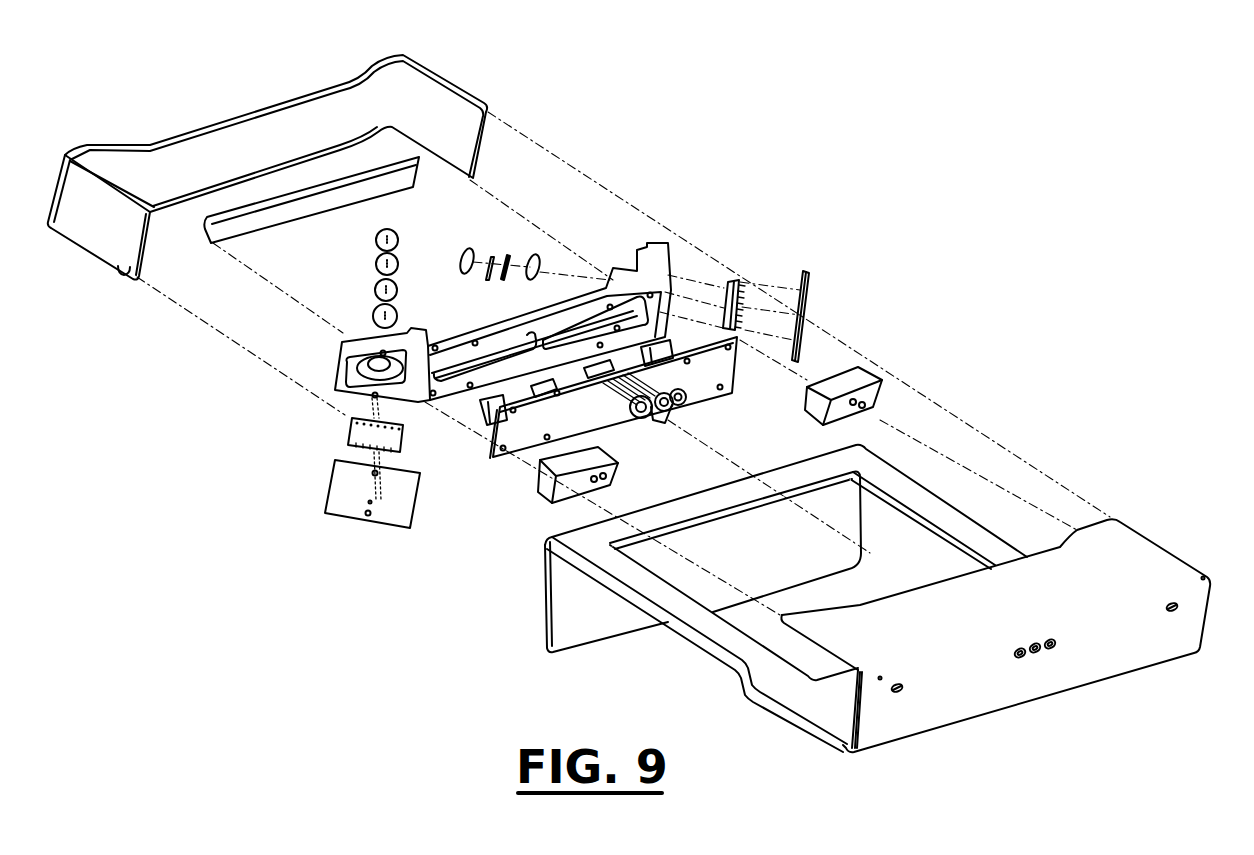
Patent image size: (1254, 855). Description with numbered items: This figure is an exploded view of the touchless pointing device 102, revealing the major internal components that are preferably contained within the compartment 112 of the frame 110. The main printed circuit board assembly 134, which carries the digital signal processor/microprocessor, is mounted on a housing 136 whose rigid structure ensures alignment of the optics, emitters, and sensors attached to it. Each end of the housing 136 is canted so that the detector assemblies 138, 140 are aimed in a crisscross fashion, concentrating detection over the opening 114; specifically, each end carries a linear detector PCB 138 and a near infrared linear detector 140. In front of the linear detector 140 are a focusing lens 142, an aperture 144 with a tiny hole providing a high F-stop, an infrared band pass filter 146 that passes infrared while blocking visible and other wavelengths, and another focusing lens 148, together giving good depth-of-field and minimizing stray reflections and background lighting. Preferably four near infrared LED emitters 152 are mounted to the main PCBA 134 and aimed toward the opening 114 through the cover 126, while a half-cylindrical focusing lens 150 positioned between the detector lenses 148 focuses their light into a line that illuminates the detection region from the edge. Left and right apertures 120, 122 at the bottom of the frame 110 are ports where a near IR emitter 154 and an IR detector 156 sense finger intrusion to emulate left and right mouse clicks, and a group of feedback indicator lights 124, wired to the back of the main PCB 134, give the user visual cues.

The touchless pointing device 102 is at (711, 193).
The frame 110 is at (722, 660).
The compartment 112 is at (842, 690).
The opening 114 is at (923, 543).
The left aperture 120 is at (897, 697).
The right aperture 122 is at (1172, 610).
The feedback indicator lights 124 is at (664, 428).
The cover 126 is at (197, 128).
The main printed circuit board assembly 134 is at (730, 364).
The housing 136 is at (665, 248).
The linear detector PCB 138 is at (806, 290).
The near infrared linear detector 140 is at (735, 280).
The focusing lens 142 is at (372, 316).
The aperture 144 is at (510, 270).
The infrared band pass filter 146 is at (375, 264).
The focusing lens 148 is at (379, 237).
The half-cylindrical focusing lens 150 is at (242, 234).
The near infrared LED emitters 152 is at (660, 348).
The near IR emitter 154 is at (868, 404).
The IR detector 156 is at (858, 405).